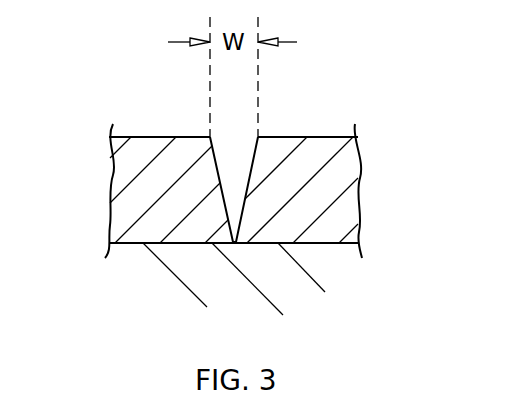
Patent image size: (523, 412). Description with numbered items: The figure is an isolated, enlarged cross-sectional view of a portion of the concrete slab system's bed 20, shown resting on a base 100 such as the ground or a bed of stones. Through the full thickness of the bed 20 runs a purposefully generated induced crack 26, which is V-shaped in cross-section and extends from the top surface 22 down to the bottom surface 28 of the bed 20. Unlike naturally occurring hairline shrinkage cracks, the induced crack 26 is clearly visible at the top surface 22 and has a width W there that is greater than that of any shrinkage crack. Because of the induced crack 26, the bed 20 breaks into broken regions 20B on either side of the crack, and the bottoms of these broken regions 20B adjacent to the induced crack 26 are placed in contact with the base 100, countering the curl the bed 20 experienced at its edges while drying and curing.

The bed 20 is at (347, 172).
The broken regions 20B is at (147, 148).
The top surface 22 is at (320, 140).
The induced crack 26 is at (252, 157).
The bottom surface 28 is at (138, 245).
The base 100 is at (327, 262).